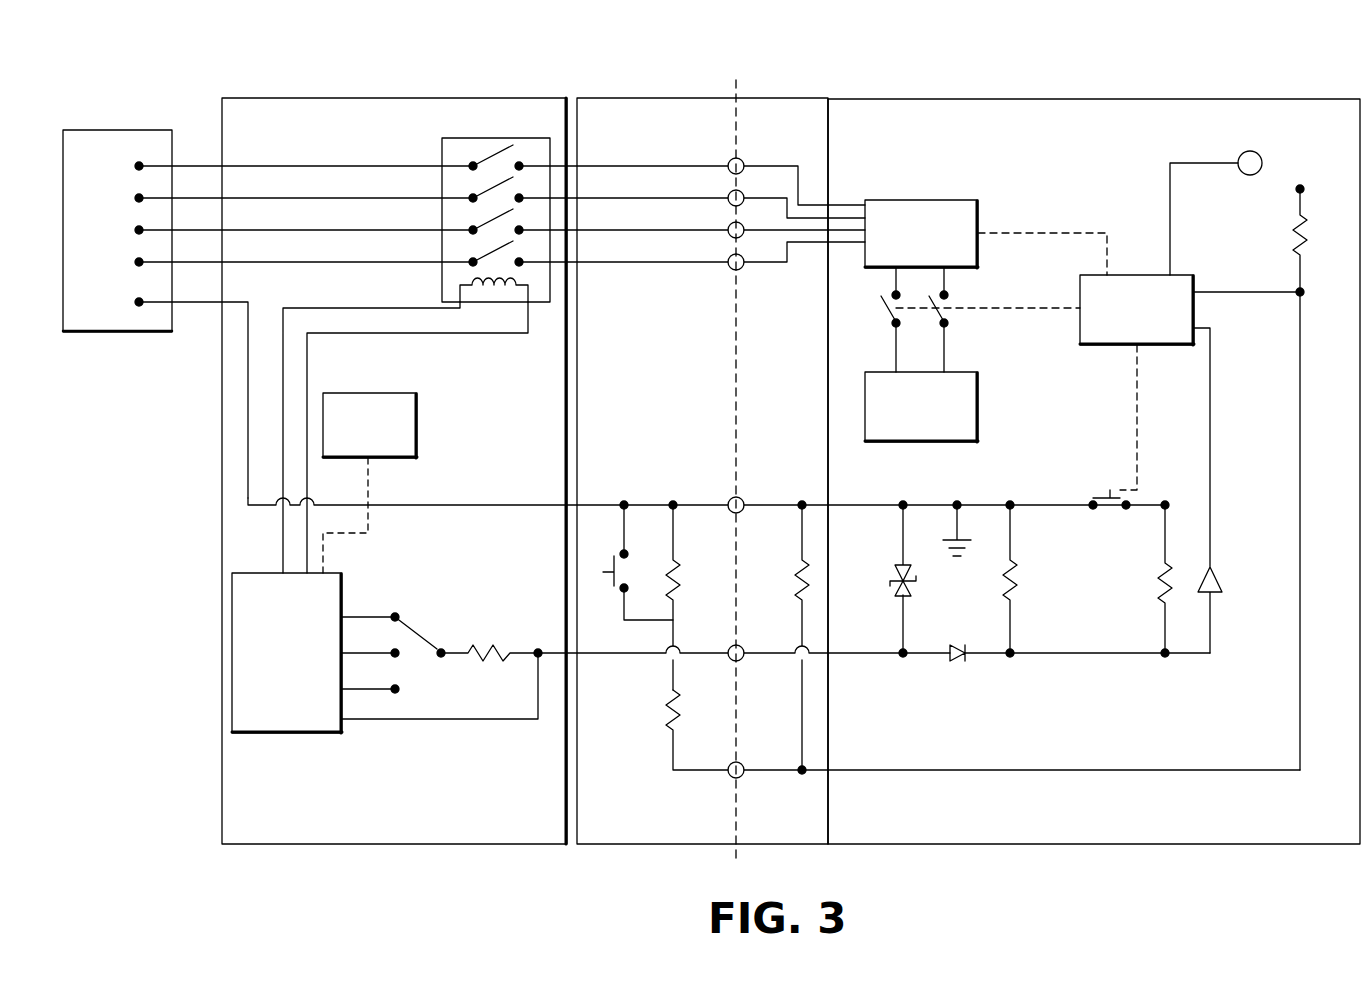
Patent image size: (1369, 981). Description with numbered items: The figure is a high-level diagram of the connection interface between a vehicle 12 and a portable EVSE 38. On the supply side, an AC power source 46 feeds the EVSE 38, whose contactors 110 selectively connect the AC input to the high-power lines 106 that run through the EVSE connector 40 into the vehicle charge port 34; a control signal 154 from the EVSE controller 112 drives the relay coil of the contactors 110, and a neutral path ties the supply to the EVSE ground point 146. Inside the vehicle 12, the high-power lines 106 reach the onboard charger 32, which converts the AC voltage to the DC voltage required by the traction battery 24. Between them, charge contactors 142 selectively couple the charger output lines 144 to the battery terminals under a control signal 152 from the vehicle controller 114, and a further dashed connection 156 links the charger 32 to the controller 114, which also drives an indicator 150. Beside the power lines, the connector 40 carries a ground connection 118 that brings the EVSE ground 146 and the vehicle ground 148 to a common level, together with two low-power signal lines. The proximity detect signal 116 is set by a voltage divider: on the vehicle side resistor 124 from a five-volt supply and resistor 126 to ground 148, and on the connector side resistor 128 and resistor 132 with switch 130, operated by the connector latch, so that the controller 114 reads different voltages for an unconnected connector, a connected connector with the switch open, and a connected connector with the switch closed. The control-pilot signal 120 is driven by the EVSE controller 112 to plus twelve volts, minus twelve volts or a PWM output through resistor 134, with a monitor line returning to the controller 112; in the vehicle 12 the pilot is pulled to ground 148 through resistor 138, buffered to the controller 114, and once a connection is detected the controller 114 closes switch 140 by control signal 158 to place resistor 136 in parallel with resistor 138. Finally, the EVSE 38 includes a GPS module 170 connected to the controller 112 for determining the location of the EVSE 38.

The vehicle 12 is at (1145, 98).
The traction battery 24 is at (865, 400).
The charger 32 is at (920, 200).
The charge port 34 is at (828, 97).
The EVSE 38 is at (331, 97).
The EVSE connector 40 is at (598, 97).
The power source 46 is at (118, 128).
The high-power lines 106 is at (610, 165).
The EVSE contactors 110 is at (499, 178).
The EVSE controller 112 is at (232, 653).
The vehicle controller 114 is at (1137, 275).
The proximity detect signal 116 is at (752, 768).
The ground connection 118 is at (762, 505).
The control-pilot signal 120 is at (744, 648).
The resistor R4 124 is at (1306, 225).
The resistor R5 126 is at (808, 582).
The resistor R6 128 is at (672, 730).
The switch S3 130 is at (603, 574).
The resistor R7 132 is at (678, 562).
The resistor R1 134 is at (490, 660).
The resistor R2 136 is at (1172, 565).
The resistor R3 138 is at (1018, 595).
The switch S2 140 is at (1098, 530).
The charge contactors 142 is at (946, 314).
The charger output lines 144 is at (946, 292).
The EVSE ground point 146 is at (139, 306).
The vehicle ground connection 148 is at (960, 558).
The indicator 150 is at (1238, 156).
The contactor control signal 152 is at (1018, 308).
The EVSE contactor control signal 154 is at (427, 335).
The charger control line 156 is at (1020, 233).
The switch S2 control signal 158 is at (1145, 432).
The GPS module 170 is at (418, 428).